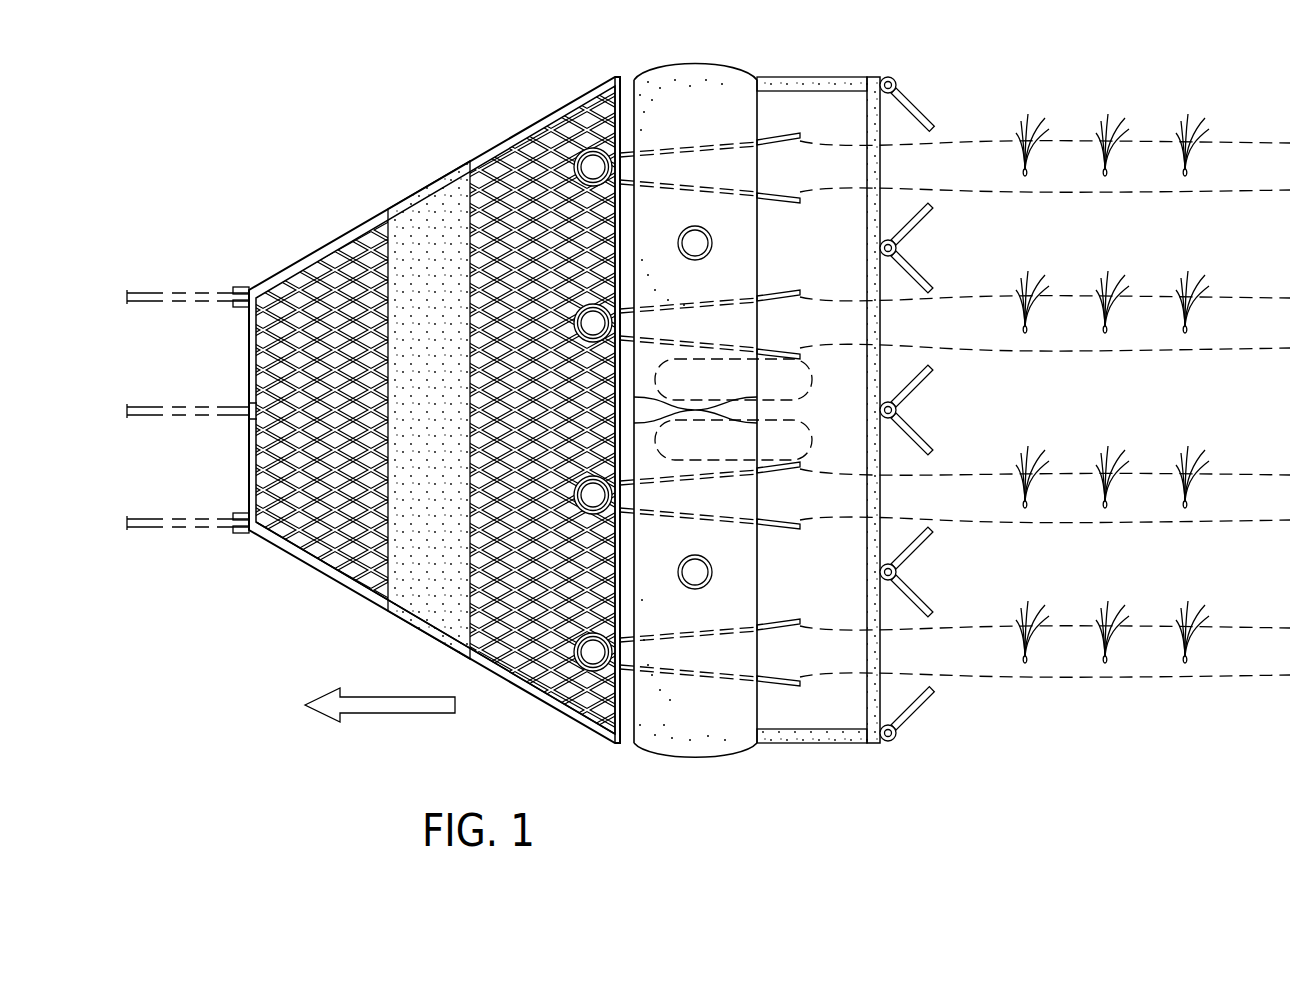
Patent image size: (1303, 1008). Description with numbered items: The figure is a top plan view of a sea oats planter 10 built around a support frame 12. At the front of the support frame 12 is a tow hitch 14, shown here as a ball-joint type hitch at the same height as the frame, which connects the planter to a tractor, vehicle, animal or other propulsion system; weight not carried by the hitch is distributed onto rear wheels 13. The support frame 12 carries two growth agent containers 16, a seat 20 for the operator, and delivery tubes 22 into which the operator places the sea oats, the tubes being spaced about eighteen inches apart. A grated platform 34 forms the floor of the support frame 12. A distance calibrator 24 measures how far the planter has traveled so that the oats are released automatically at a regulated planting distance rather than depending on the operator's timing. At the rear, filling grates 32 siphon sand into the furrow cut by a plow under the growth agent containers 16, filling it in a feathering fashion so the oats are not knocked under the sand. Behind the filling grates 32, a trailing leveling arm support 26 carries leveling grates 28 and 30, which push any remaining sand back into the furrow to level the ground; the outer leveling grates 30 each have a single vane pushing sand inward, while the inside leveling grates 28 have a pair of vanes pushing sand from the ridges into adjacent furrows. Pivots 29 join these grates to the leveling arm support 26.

The sea oats planter 10 is at (176, 175).
The support frame 12 is at (238, 366).
The rear wheels 13 is at (814, 378).
The tow hitch 14 is at (235, 287).
The growth agent container 16 is at (691, 78).
The seat 20 is at (435, 230).
The delivery tube 22 is at (595, 320).
The distance calibrator 24 is at (823, 464).
The trailing leveling arm support 26 is at (873, 745).
The inside leveling grate 28 is at (918, 249).
The pivot 29 is at (897, 85).
The outer leveling grate 30 is at (938, 107).
The filling grate 32 is at (782, 193).
The grated platform 34 is at (355, 572).